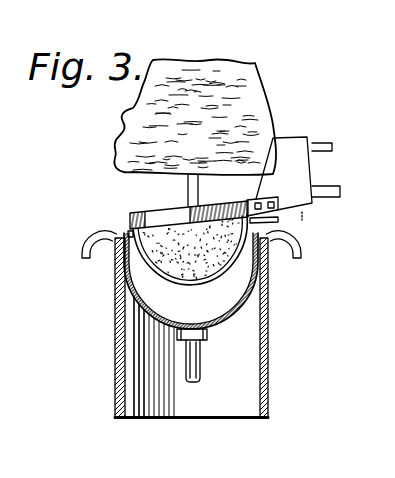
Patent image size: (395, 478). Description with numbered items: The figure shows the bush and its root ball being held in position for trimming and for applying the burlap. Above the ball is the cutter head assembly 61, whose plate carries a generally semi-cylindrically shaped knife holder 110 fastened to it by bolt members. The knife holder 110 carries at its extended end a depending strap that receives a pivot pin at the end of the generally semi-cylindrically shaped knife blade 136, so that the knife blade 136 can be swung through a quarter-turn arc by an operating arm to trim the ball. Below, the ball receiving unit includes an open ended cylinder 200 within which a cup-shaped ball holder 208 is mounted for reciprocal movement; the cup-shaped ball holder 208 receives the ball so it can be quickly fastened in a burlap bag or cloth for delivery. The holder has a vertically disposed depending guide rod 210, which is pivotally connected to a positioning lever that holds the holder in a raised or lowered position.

The cutter head assembly 61 is at (297, 148).
The knife holder 110 is at (142, 208).
The knife blade 136 is at (180, 286).
The cup-shaped ball holder 208 is at (223, 322).
The open ended cylinder 200 is at (268, 393).
The guide rod 210 is at (200, 378).